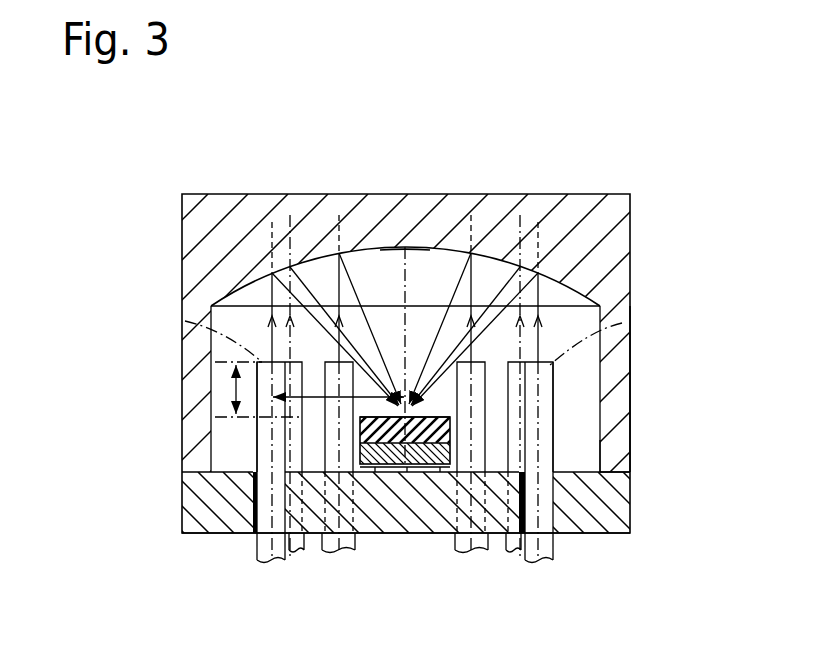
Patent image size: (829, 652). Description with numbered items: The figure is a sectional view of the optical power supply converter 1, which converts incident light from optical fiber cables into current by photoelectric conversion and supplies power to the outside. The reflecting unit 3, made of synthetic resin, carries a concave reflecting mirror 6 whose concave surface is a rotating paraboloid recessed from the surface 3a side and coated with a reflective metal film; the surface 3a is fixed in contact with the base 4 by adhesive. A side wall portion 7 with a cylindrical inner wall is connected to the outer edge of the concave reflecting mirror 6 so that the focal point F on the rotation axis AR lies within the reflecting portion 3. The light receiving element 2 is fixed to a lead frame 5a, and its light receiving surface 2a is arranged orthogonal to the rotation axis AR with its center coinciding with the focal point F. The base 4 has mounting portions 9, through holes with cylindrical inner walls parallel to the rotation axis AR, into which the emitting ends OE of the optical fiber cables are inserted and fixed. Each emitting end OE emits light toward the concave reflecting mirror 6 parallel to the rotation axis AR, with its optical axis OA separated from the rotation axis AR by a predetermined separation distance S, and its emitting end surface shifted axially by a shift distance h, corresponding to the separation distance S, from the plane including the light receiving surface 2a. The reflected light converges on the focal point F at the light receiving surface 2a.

The optical power supply converter 1 is at (160, 197).
The reflecting unit 3 is at (240, 194).
The surface 3a is at (618, 478).
The base 4 is at (182, 491).
The concave reflecting mirror 6 is at (588, 298).
The side wall portion 7 is at (630, 401).
The mounting portion 9 is at (553, 530).
The light receiving element 2 is at (360, 432).
The light receiving surface 2a is at (432, 414).
The lead frame 5a is at (412, 468).
The rotation axis AR is at (407, 272).
The optical axis OA is at (622, 323).
The emitting end OE is at (553, 418).
The focal point F is at (414, 357).
The separation distance S is at (320, 393).
The shift distance h is at (222, 386).